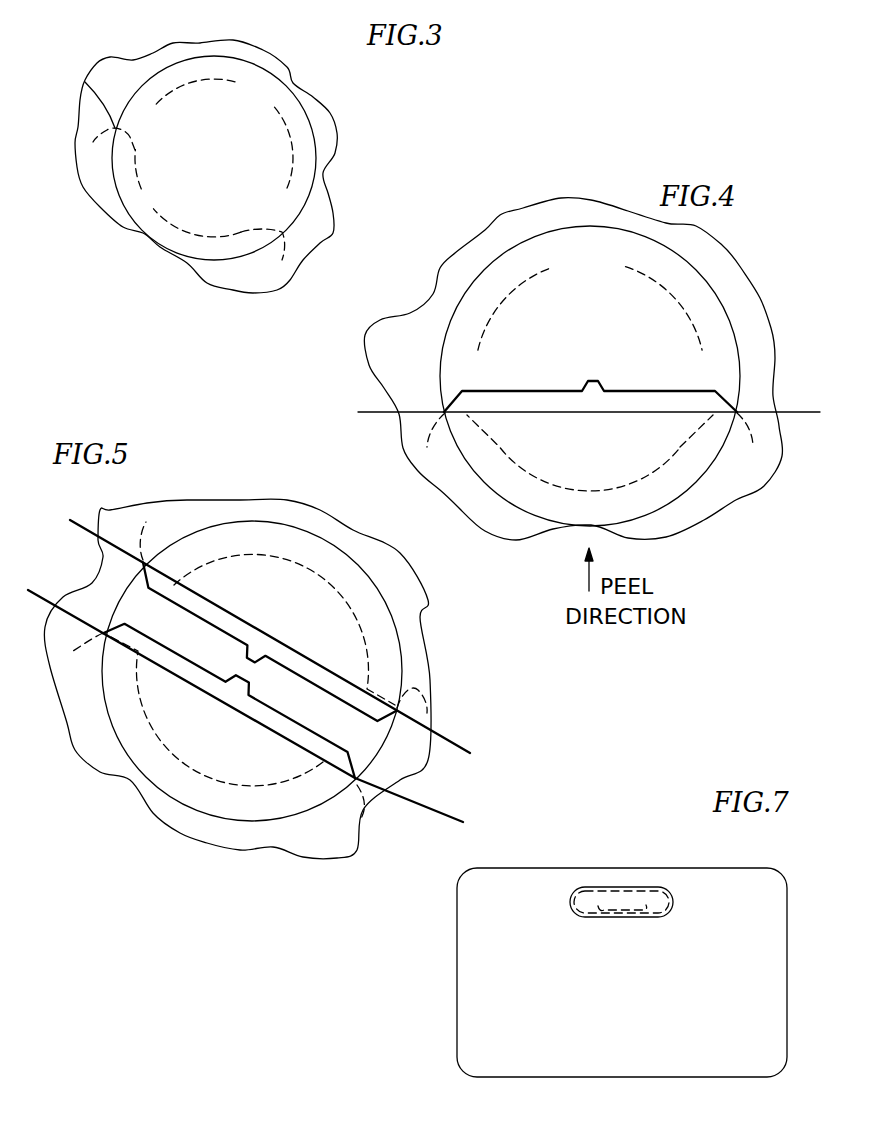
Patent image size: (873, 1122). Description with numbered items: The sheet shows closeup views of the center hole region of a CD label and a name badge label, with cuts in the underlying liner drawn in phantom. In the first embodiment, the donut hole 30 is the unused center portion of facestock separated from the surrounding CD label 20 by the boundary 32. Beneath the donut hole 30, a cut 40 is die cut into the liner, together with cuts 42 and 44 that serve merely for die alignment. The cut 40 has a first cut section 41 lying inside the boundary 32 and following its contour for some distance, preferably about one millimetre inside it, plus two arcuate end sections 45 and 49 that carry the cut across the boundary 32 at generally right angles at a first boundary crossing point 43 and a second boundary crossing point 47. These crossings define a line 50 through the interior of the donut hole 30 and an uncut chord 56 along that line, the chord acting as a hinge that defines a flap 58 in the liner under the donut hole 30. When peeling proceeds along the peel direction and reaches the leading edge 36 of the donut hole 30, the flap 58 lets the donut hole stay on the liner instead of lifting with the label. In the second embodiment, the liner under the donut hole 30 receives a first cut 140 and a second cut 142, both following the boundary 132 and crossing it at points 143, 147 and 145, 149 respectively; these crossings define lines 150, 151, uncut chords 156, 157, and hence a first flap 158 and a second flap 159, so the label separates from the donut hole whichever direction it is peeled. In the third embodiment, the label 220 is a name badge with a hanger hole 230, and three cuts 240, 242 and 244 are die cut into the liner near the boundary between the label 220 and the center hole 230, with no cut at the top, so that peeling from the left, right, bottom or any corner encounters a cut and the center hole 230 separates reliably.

In FIG. 3, the CD label 20 is at (107, 208).
In FIG. 4, the CD label 20 is at (391, 354).
In FIG. 5, the CD label 20 is at (253, 515).
In FIG. 3, the donut hole 30 is at (372, 109).
In FIG. 4, the donut hole 30 is at (579, 290).
In FIG. 5, the donut hole 30 is at (309, 628).
In FIG. 3, the boundary 32 is at (285, 82).
In FIG. 3, the leading edge 36 is at (187, 263).
In FIG. 4, the leading edge 36 is at (591, 525).
In FIG. 5, the leading edge 36 is at (245, 817).
In FIG. 3, the cut 40 is at (218, 242).
In FIG. 3, the first cut section 41 is at (153, 210).
In FIG. 4, the first cut section 41 is at (516, 463).
In FIG. 3, the cut 42 is at (290, 170).
In FIG. 4, the cut 42 is at (664, 283).
In FIG. 3, the first boundary crossing point 43 is at (85, 82).
In FIG. 4, the first boundary crossing point 43 is at (444, 411).
In FIG. 3, the cut 44 is at (183, 88).
In FIG. 4, the cut 44 is at (538, 270).
In FIG. 3, the end section 45 is at (93, 143).
In FIG. 3, the second boundary crossing point 47 is at (283, 237).
In FIG. 4, the second boundary crossing point 47 is at (737, 411).
In FIG. 3, the end section 49 is at (283, 260).
In FIG. 4, the line 50 is at (373, 414).
In FIG. 4, the uncut chord 56 is at (591, 381).
In FIG. 4, the flap 58 is at (653, 435).
In FIG. 5, the boundary 132 is at (355, 778).
In FIG. 5, the first cut 140 is at (360, 802).
In FIG. 5, the second cut 142 is at (365, 662).
In FIG. 5, the boundary crossing point 143 is at (103, 633).
In FIG. 5, the boundary crossing point 145 is at (103, 557).
In FIG. 5, the boundary crossing point 147 is at (395, 795).
In FIG. 5, the boundary crossing point 149 is at (373, 750).
In FIG. 5, the line 150 is at (398, 812).
In FIG. 5, the line 151 is at (453, 742).
In FIG. 5, the uncut chord 156 is at (240, 682).
In FIG. 5, the uncut chord 157 is at (243, 660).
In FIG. 5, the first flap 158 is at (210, 758).
In FIG. 5, the second flap 159 is at (310, 590).
In FIG. 7, the label 220 is at (457, 995).
In FIG. 7, the hanger hole 230 is at (635, 887).
In FIG. 7, the cut 240 is at (670, 907).
In FIG. 7, the cut 242 is at (578, 912).
In FIG. 7, the cut 244 is at (595, 907).